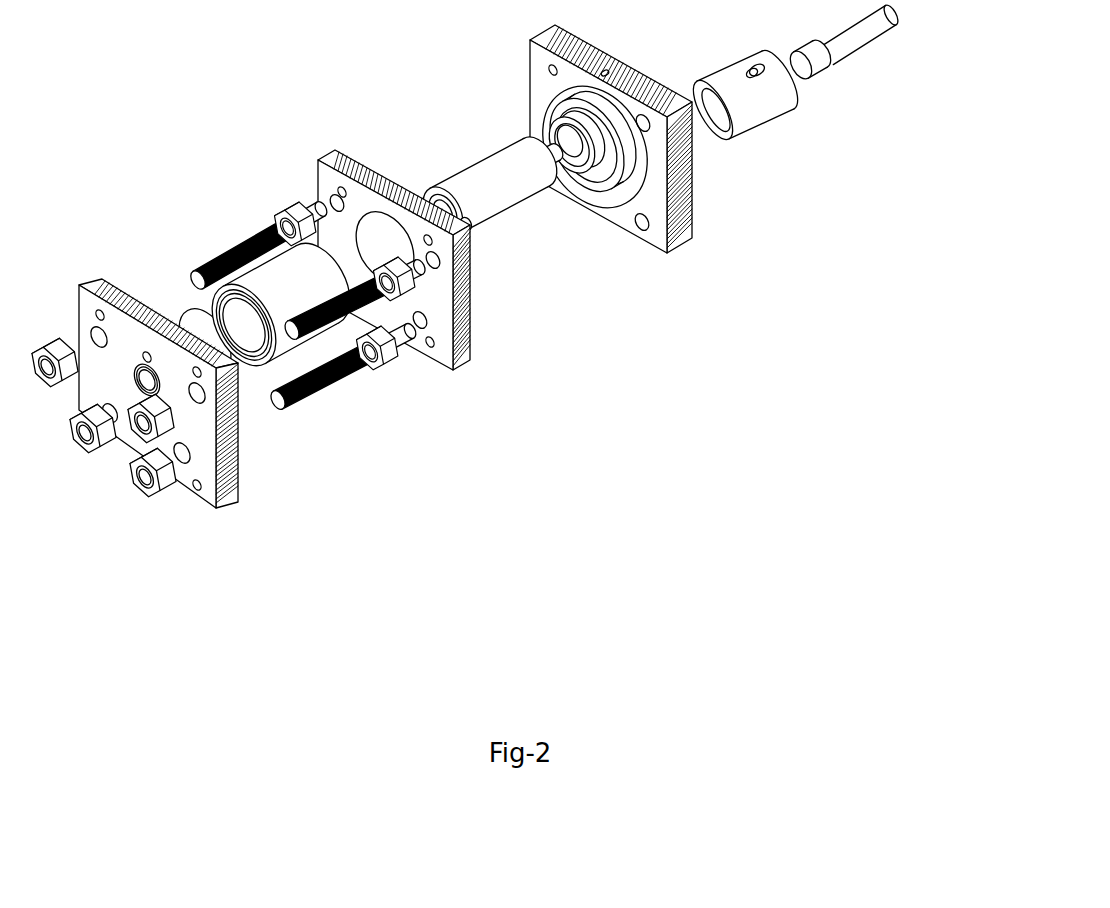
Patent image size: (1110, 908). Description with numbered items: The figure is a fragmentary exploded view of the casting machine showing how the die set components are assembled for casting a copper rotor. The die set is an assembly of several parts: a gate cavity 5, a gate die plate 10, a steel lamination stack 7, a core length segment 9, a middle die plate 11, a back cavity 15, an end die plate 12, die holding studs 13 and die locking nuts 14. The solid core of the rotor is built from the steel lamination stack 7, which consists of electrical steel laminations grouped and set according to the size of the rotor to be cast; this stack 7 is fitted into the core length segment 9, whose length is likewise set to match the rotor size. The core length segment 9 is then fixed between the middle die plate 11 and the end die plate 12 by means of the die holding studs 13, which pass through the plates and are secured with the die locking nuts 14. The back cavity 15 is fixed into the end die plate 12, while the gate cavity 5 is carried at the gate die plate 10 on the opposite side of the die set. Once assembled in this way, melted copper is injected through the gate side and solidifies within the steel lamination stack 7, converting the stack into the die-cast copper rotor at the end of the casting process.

The gate cavity 5 is at (573, 110).
The steel lamination stack 7 is at (512, 207).
The core length segment 9 is at (257, 336).
The gate die plate 10 is at (683, 218).
The middle die plate 11 is at (468, 340).
The end die plate 12 is at (130, 303).
The die holding stud 13 is at (335, 387).
The die locking nuts 14 is at (278, 210).
The back cavity 15 is at (193, 307).